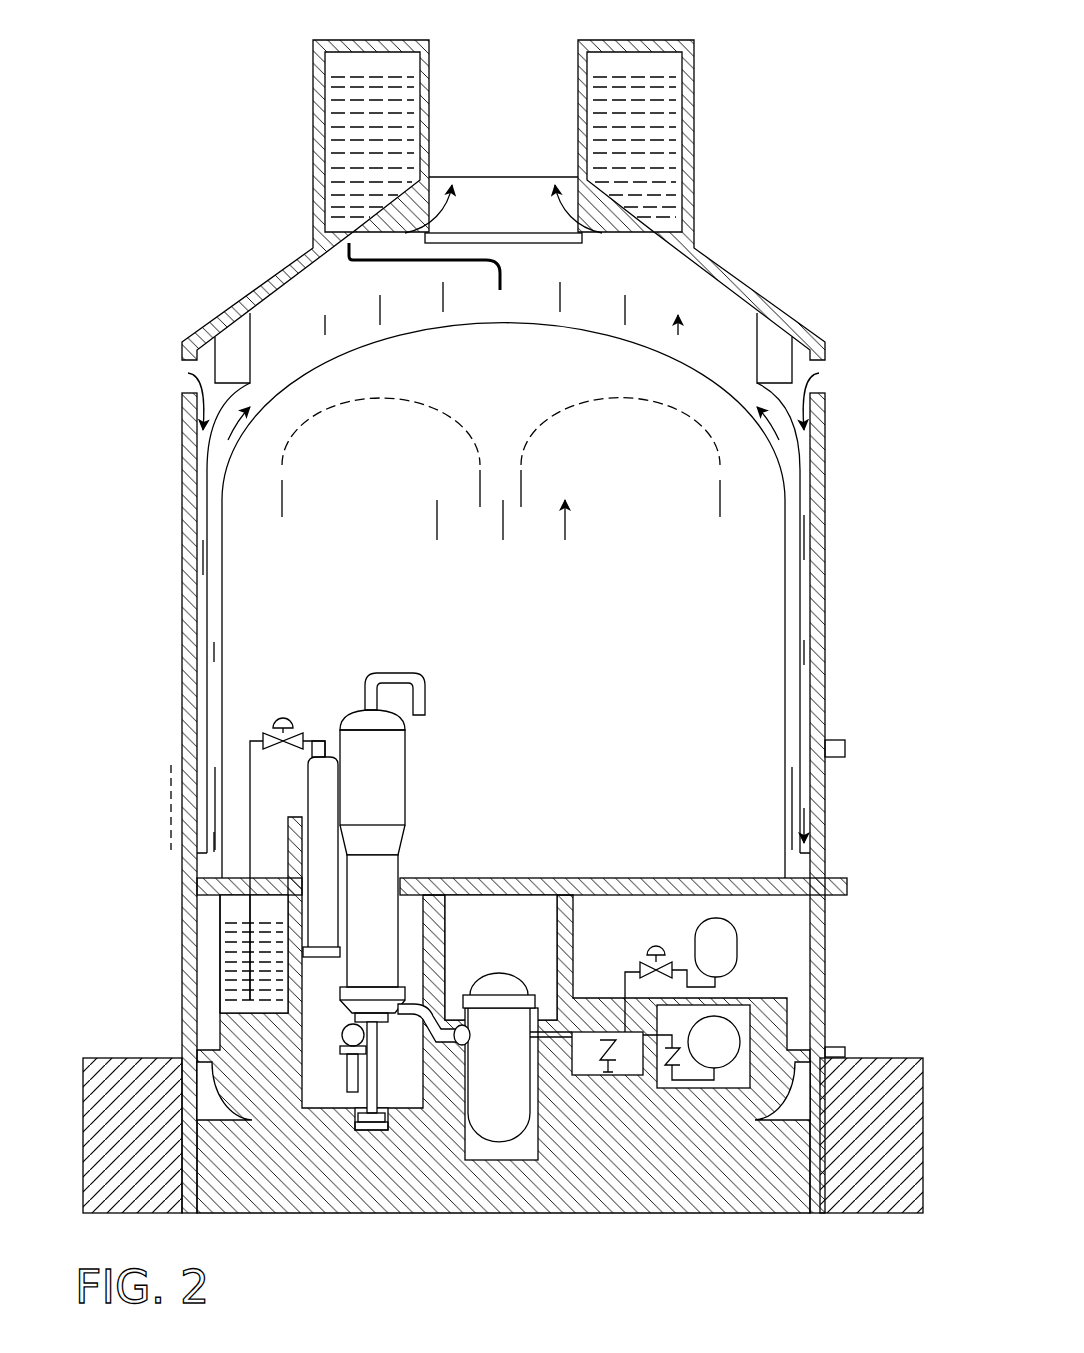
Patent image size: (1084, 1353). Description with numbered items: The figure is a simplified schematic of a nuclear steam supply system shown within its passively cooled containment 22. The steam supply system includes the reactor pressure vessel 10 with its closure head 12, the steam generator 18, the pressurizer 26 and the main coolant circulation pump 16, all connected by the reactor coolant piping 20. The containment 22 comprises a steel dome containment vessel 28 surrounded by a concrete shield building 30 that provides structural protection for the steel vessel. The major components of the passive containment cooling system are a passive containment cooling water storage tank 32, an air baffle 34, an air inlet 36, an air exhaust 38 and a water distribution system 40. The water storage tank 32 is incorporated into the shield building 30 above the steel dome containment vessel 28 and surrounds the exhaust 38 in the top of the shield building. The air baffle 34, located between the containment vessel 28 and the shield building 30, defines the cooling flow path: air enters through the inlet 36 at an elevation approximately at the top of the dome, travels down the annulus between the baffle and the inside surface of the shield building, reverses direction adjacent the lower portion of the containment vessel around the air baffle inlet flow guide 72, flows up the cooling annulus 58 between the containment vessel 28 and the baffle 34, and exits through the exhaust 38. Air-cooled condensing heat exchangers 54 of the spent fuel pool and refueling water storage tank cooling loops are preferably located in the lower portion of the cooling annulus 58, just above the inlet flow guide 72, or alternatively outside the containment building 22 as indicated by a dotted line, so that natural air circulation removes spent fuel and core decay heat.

The reactor pressure vessel 10 is at (512, 1078).
The closure head 12 is at (503, 975).
The main coolant circulation pump 16 is at (342, 1040).
The steam generator 18 is at (405, 795).
The reactor coolant piping 20 is at (400, 1014).
The passively cooled containment 22 is at (842, 550).
The pressurizer 26 is at (318, 755).
The steel dome containment vessel 28 is at (222, 580).
The concrete shield building 30 is at (822, 723).
The passive containment cooling water storage tank 32 is at (325, 165).
The air baffle 34 is at (196, 713).
The air inlet 36 is at (187, 385).
The air exhaust 38 is at (515, 52).
The water distribution system 40 is at (350, 293).
The air-cooled heat exchanger 54 is at (214, 812).
The passive containment cooling system cooling annulus 58 is at (212, 620).
The air baffle inlet flow guide 72 is at (195, 852).